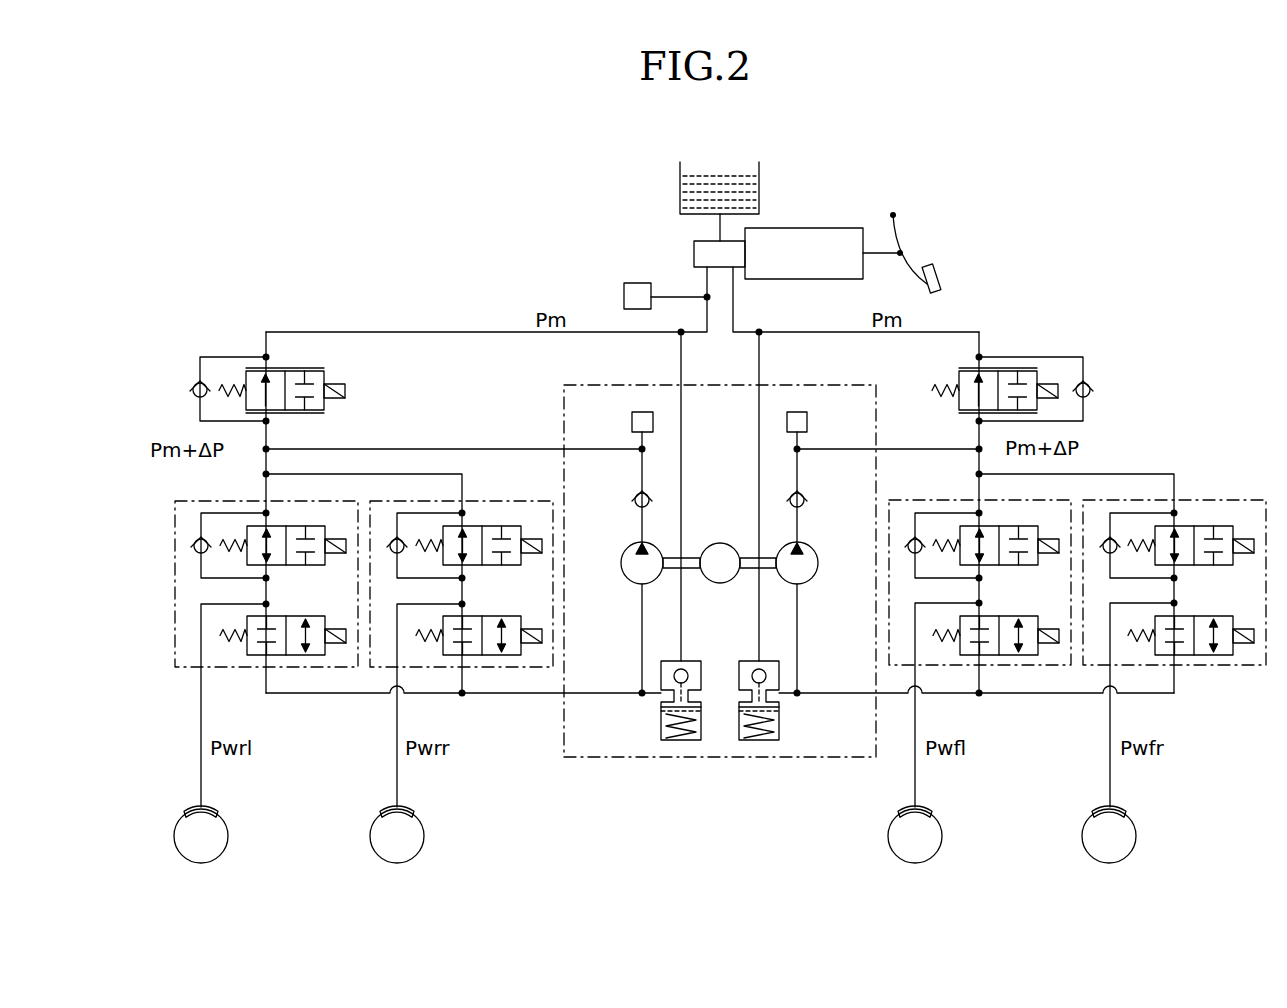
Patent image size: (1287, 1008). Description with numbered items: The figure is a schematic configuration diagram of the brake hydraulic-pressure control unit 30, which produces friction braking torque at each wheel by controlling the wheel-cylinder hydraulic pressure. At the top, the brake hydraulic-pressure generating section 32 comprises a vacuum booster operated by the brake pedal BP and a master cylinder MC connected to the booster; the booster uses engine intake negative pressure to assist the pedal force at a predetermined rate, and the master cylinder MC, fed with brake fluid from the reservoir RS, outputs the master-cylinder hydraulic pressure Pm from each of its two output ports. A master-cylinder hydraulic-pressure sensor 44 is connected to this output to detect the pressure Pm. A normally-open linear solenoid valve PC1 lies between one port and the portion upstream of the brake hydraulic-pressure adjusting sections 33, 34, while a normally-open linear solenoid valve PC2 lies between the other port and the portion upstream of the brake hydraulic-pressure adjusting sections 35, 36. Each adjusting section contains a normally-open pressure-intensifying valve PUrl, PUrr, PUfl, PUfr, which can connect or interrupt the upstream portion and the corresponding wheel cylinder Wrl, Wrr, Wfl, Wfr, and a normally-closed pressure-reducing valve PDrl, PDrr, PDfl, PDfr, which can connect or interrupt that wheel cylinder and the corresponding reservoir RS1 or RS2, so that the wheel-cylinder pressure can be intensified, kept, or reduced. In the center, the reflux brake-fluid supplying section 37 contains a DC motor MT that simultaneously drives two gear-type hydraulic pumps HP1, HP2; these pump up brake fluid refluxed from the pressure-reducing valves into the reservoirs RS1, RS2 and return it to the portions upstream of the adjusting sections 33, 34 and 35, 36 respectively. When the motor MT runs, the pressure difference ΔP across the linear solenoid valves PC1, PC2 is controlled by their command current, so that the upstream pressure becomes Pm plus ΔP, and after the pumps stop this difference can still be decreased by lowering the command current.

The brake hydraulic-pressure control unit 30 is at (880, 174).
The brake hydraulic-pressure generating section 32 is at (862, 224).
The master-cylinder hydraulic-pressure sensor 44 is at (624, 297).
The brake hydraulic-pressure adjusting section 33 is at (1097, 500).
The brake hydraulic-pressure adjusting section 34 is at (903, 500).
The brake hydraulic-pressure adjusting section 35 is at (387, 500).
The brake hydraulic-pressure adjusting section 36 is at (190, 500).
The reflux brake-fluid supplying section 37 is at (785, 759).
The reservoir RS is at (760, 201).
The master cylinder MC is at (694, 253).
The brake pedal BP is at (944, 279).
The normally-open linear solenoid valve PC1 is at (968, 368).
The normally-open linear solenoid valve PC2 is at (316, 368).
The pressure-intensifying valve PUrl is at (280, 526).
The pressure-reducing valve PDrl is at (280, 616).
The pressure-intensifying valve PUrr is at (475, 526).
The pressure-reducing valve PDrr is at (475, 616).
The pressure-intensifying valve PUfl is at (993, 526).
The pressure-reducing valve PDfl is at (993, 616).
The pressure-intensifying valve PUfr is at (1188, 526).
The pressure-reducing valve PDfr is at (1188, 616).
The hydraulic pump HP1 is at (800, 585).
The hydraulic pump HP2 is at (639, 585).
The DC motor MT is at (720, 584).
The reservoir RS1 is at (779, 719).
The reservoir RS2 is at (661, 719).
The wheel cylinder Wrl is at (190, 808).
The wheel cylinder Wrr is at (410, 808).
The wheel cylinder Wfl is at (928, 808).
The wheel cylinder Wfr is at (1123, 808).